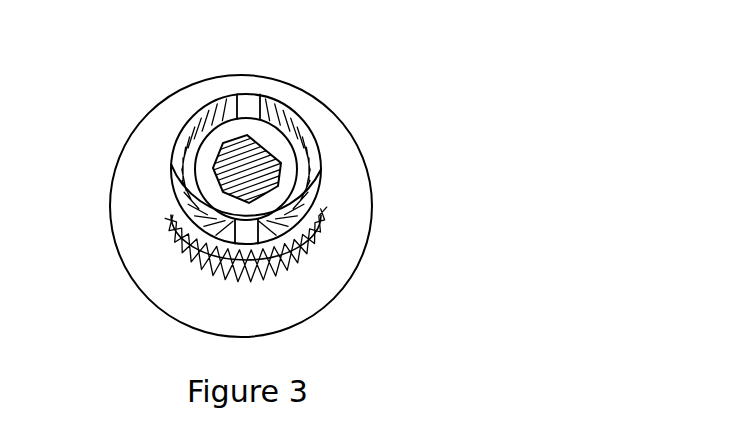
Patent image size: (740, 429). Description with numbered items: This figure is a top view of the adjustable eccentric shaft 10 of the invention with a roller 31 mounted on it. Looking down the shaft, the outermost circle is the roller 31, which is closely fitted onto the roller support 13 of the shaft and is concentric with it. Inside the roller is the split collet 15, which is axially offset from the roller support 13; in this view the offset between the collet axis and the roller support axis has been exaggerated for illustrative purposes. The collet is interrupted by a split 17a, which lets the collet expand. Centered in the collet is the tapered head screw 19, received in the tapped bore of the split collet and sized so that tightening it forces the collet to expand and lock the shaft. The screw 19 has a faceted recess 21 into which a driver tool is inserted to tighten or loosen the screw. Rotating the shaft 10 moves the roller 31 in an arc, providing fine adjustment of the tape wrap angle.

The shaft 10 is at (163, 244).
The roller support 13 is at (310, 228).
The collet 15 is at (172, 155).
The split 17a is at (250, 100).
The screw 19 is at (197, 125).
The faceted recess 21 is at (273, 157).
The roller 31 is at (345, 272).